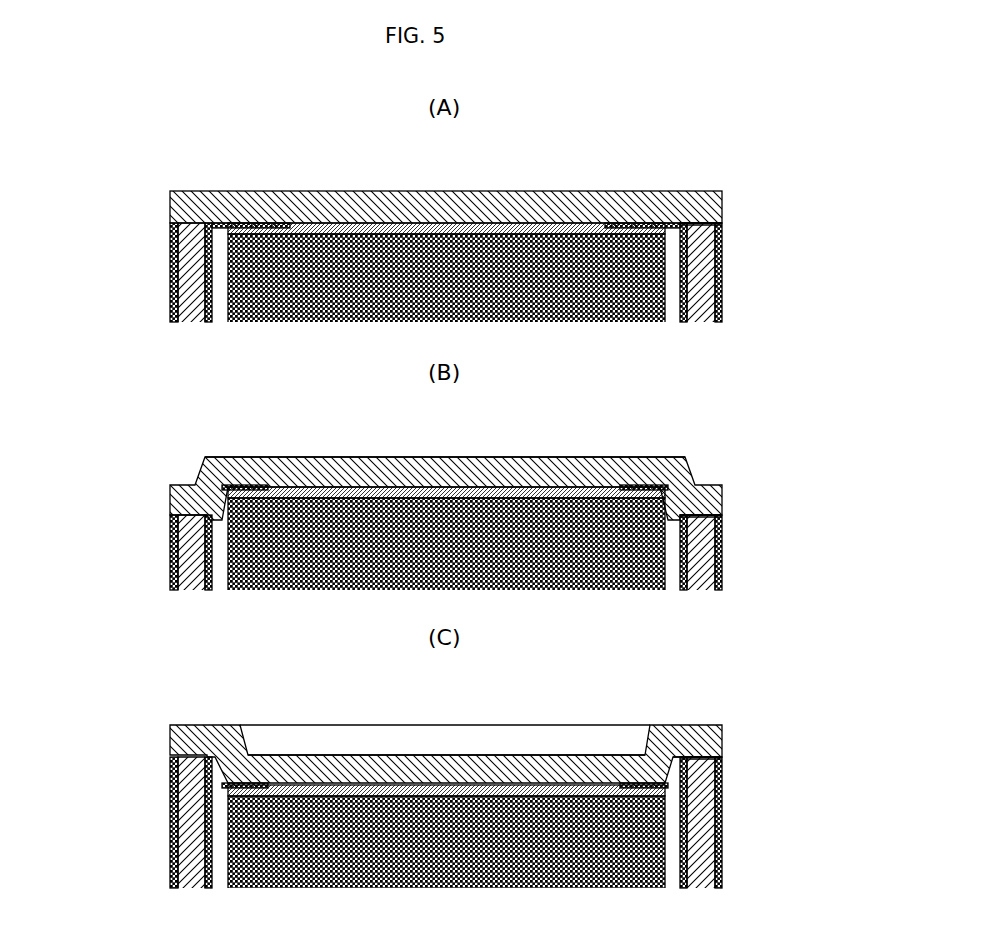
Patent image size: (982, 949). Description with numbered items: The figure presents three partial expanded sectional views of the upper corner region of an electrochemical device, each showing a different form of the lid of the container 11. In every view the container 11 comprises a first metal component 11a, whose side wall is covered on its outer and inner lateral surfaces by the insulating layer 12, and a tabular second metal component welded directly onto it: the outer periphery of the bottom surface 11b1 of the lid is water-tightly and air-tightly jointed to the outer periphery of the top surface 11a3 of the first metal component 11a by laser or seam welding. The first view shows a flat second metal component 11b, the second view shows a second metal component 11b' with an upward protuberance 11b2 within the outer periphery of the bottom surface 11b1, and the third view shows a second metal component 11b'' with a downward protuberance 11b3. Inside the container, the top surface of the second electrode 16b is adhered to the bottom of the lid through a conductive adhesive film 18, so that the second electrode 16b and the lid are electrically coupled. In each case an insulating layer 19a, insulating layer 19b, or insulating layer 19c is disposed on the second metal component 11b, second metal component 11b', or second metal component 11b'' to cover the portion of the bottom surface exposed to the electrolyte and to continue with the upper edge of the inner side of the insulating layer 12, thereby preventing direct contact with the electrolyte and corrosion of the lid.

The container 11 is at (380, 539).
The first metal component 11a is at (190, 257).
The second metal component 11b is at (407, 207).
The second metal component 11b' is at (406, 488).
The second metal component 11b'' is at (406, 754).
The bottom surface 11b1 is at (713, 210).
The upward protuberance 11b2 is at (330, 472).
The downward protuberance 11b3 is at (330, 765).
The top surface 11a3 is at (700, 242).
The insulating layer 12 is at (207, 293).
The second electrode 16b is at (640, 290).
The conductive adhesive film 18 is at (440, 222).
The insulating layer 19a is at (245, 222).
The insulating layer 19b is at (245, 486).
The insulating layer 19c is at (257, 784).